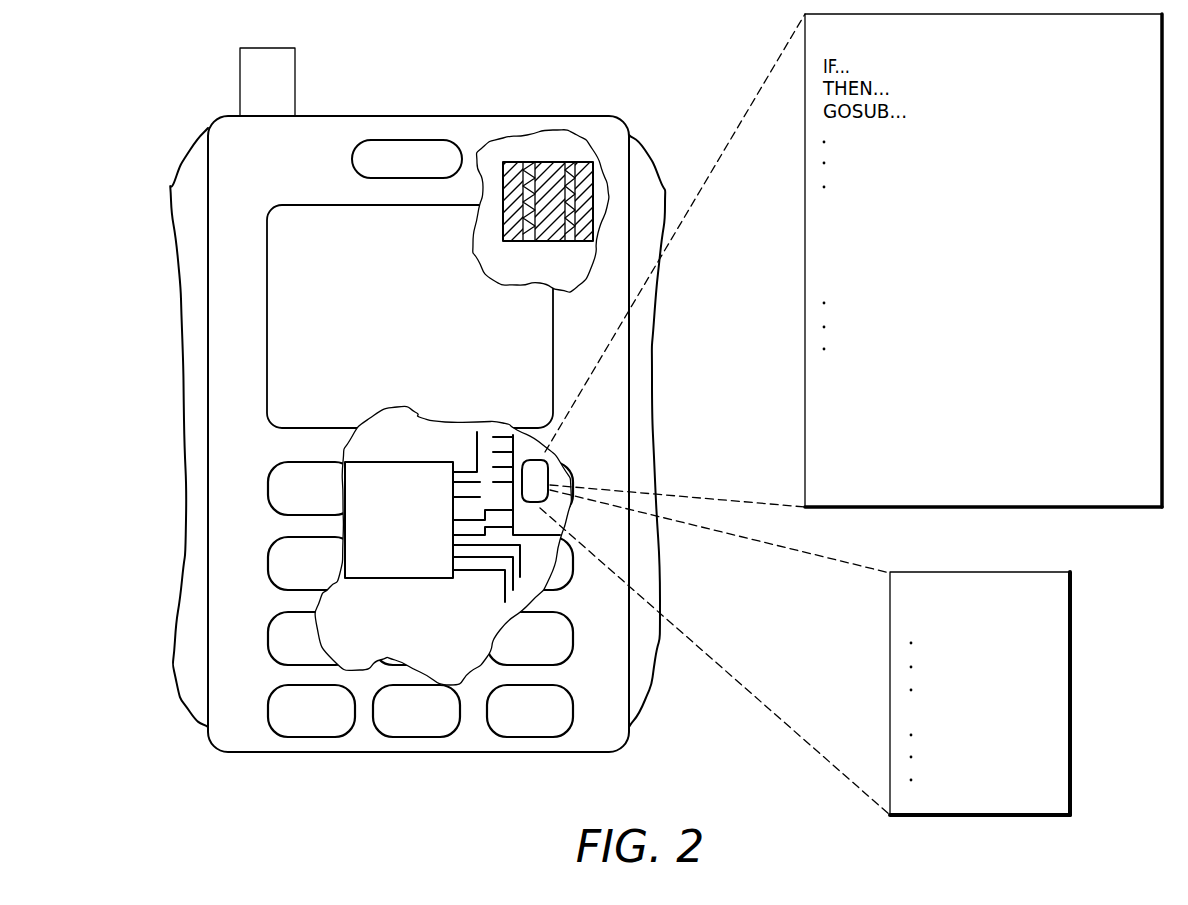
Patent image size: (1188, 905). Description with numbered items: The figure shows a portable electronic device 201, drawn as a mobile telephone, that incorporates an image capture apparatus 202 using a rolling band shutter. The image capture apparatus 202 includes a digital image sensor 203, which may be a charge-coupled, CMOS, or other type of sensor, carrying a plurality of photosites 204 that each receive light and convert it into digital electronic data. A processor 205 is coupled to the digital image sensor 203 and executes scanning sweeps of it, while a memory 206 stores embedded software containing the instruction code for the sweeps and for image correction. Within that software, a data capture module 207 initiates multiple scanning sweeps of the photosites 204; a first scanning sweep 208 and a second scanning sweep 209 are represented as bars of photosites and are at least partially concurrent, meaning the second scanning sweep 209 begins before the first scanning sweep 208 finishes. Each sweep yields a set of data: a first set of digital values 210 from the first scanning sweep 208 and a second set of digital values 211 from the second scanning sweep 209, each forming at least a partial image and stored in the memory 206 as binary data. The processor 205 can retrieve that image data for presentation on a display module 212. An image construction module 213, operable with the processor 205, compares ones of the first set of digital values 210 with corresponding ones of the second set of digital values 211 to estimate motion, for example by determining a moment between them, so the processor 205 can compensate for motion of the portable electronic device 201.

The portable electronic device 201 is at (239, 745).
The image capture apparatus 202 is at (543, 171).
The digital image sensor 203 is at (544, 166).
The photosite 204 is at (519, 232).
The processor 205 is at (399, 472).
The memory 206 is at (523, 450).
The data capture module 207 is at (813, 205).
The first scanning sweep 208 is at (572, 162).
The second scanning sweep 209 is at (528, 162).
The first set of digital values 210 is at (905, 612).
The second set of digital values 211 is at (905, 703).
The display module 212 is at (267, 247).
The image construction module 213 is at (813, 364).